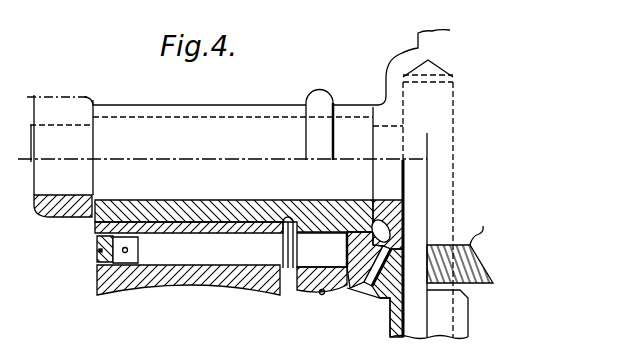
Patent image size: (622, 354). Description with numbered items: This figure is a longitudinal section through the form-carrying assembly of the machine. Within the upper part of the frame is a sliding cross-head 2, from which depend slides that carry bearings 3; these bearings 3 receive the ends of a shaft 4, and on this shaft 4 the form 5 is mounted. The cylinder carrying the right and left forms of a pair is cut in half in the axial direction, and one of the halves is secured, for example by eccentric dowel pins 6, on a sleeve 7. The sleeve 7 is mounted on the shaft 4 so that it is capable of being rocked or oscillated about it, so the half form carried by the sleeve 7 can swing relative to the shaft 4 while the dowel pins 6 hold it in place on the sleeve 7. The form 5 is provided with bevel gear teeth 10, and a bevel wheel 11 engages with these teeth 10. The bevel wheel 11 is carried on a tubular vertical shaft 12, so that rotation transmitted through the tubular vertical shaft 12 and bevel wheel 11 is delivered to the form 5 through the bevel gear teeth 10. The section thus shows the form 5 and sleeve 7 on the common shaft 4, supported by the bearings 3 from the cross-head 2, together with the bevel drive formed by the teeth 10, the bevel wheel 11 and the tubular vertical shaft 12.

The sliding cross-head 2 is at (403, 212).
The bearings 3 is at (53, 213).
The shaft 4 is at (48, 178).
The form 5 is at (205, 283).
The eccentric dowel pins 6 is at (97, 257).
The sleeve 7 is at (206, 117).
The bevel gear teeth 10 is at (373, 285).
The bevel wheel 11 is at (478, 258).
The tubular vertical shaft 12 is at (462, 320).